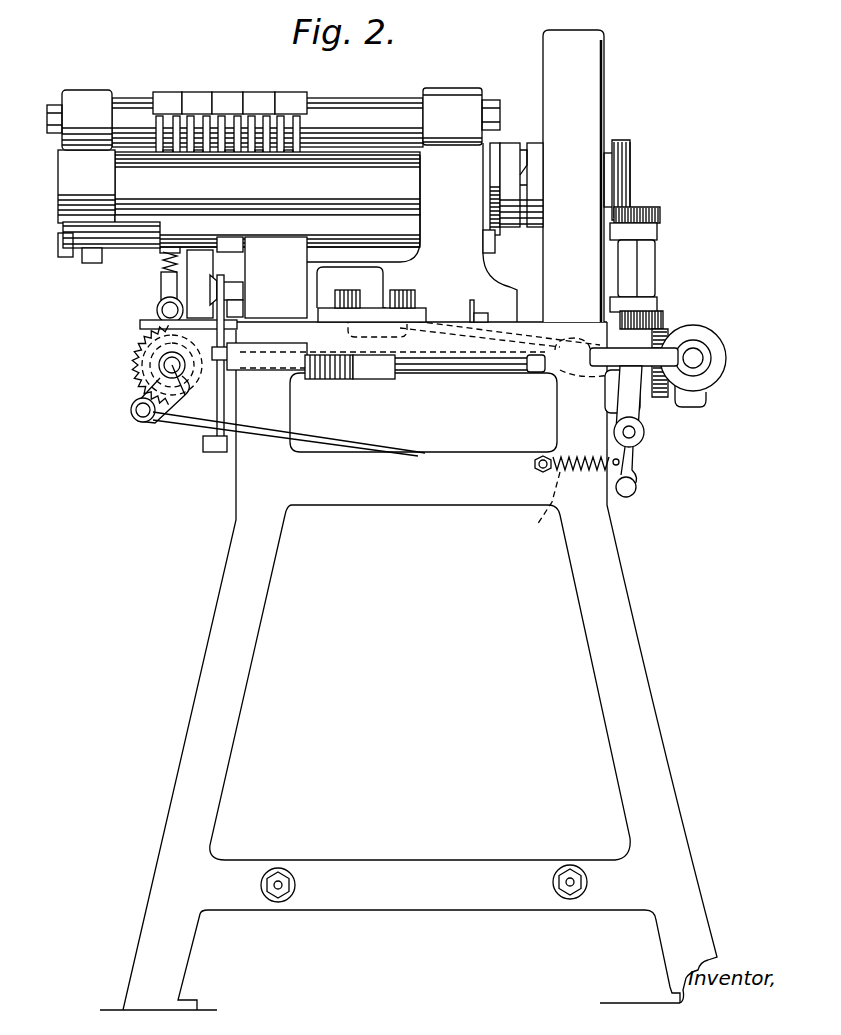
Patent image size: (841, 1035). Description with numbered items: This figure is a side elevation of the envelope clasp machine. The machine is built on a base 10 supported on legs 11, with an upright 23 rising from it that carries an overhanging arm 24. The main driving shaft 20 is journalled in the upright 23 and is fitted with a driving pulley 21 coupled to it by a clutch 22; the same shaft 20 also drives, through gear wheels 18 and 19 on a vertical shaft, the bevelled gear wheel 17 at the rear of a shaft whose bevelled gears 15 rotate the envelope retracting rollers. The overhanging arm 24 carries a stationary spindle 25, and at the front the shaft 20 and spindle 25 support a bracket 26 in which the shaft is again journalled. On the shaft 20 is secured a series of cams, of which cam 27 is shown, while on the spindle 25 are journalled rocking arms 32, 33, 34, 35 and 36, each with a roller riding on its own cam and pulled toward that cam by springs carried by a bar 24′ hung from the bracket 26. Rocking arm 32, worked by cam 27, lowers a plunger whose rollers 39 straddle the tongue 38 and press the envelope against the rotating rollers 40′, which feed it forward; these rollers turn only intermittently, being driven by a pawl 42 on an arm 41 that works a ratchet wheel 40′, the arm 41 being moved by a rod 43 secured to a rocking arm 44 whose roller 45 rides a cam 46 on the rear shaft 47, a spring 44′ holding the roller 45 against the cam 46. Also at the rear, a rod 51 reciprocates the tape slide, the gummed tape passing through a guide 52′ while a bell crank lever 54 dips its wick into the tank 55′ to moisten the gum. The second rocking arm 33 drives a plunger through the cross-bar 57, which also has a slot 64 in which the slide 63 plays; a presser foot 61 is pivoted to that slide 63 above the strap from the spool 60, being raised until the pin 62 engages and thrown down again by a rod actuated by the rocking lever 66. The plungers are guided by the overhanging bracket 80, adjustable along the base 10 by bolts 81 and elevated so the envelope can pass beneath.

The base 10 is at (345, 385).
The legs 11 is at (212, 632).
The bevelled gears 15 is at (190, 392).
The bevelled gear wheel 17 is at (645, 396).
The gear wheel 18 is at (665, 312).
The gear wheel 19 is at (630, 192).
The main driving shaft 20 is at (267, 230).
The driving pulley 21 is at (603, 80).
The clutch 22 is at (535, 230).
The upright 23 is at (424, 256).
The overhanging arm 24 is at (423, 140).
The bar 24′ is at (108, 265).
The spindle 25 is at (267, 107).
The bracket 26 is at (58, 165).
The cam 27 is at (148, 222).
The rocking arm 32 is at (164, 92).
The rocking arm 33 is at (189, 92).
The rocking arm 34 is at (227, 92).
The rocking arm 35 is at (253, 92).
The rocking arm 36 is at (291, 92).
The tongue 38 is at (140, 324).
The rollers 39 is at (156, 316).
The ratchet wheel 40′ is at (140, 370).
The arm 41 is at (152, 395).
The pawl 42 is at (148, 423).
The rod 43 is at (378, 452).
The rocking arm 44 is at (626, 462).
The spring 44′ is at (541, 510).
The roller 45 is at (605, 368).
The cam 46 is at (713, 334).
The shaft 47 is at (703, 360).
The rod 51 is at (482, 312).
The guide 52′ is at (470, 302).
The bell crank lever 54 is at (355, 362).
The tank 55′ is at (380, 380).
The cross-bar 57 is at (161, 284).
The spool 60 is at (236, 338).
The presser foot 61 is at (243, 308).
The pin 62 is at (243, 290).
The slide 63 is at (203, 295).
The slot 64 is at (201, 283).
The rocking lever 66 is at (218, 445).
The overhanging bracket 80 is at (305, 272).
The bolts 81 is at (375, 300).